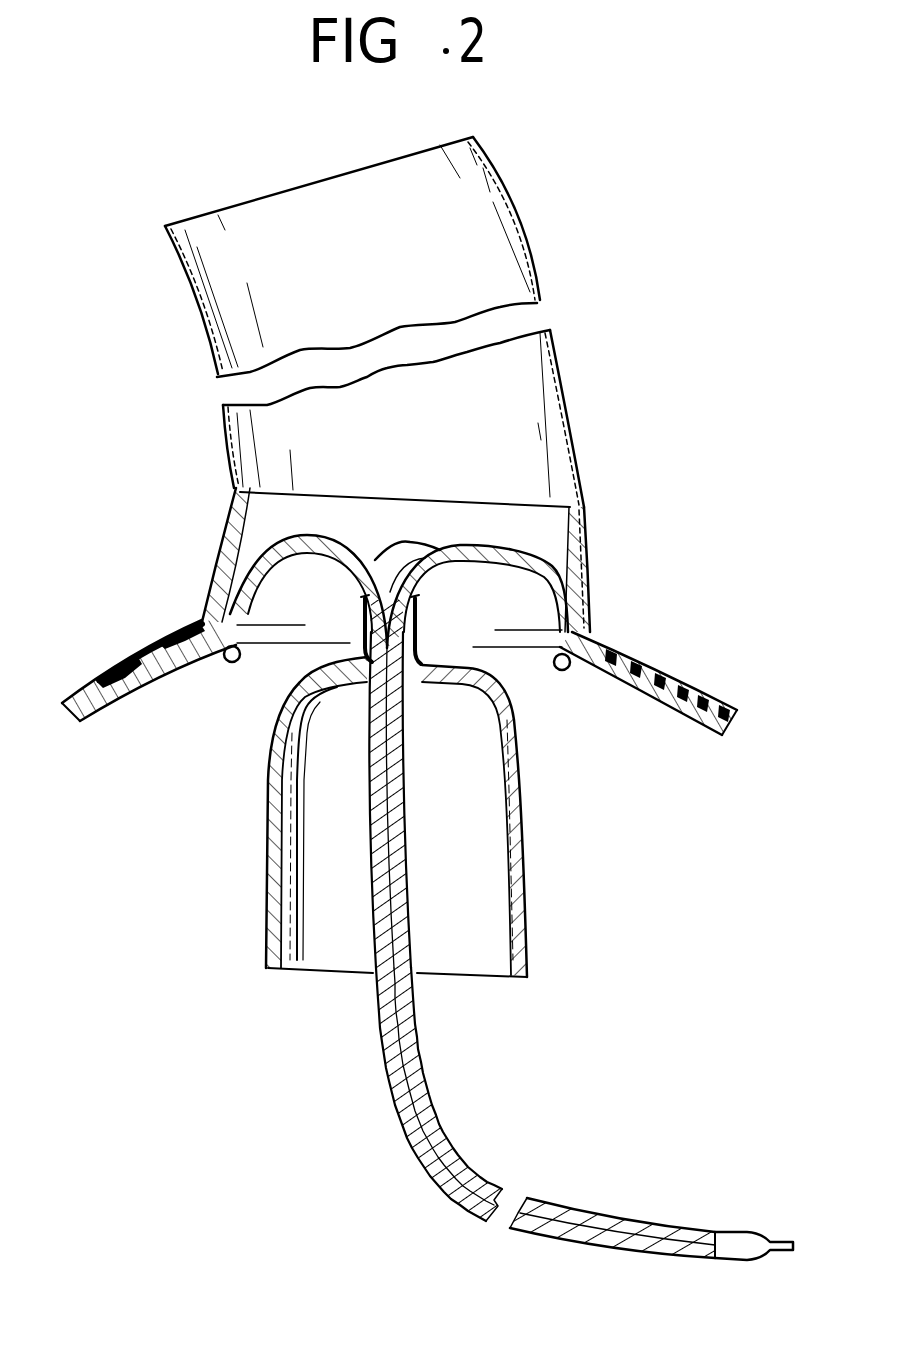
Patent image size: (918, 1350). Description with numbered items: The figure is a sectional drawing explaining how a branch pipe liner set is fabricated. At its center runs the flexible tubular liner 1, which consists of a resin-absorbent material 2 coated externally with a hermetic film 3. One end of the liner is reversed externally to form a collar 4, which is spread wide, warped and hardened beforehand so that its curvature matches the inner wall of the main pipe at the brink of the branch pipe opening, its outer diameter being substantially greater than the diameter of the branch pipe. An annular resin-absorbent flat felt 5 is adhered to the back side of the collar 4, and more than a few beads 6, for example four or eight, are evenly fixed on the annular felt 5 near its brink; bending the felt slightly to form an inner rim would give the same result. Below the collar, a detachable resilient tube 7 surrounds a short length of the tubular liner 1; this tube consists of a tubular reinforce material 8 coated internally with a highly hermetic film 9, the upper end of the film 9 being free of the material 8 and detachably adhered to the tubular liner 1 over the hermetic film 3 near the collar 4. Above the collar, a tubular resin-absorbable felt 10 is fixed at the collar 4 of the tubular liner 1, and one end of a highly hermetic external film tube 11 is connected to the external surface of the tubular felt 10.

The flexible tubular liner 1 is at (440, 1092).
The resin-absorbent material 2 is at (408, 1040).
The hermetic film 3 is at (463, 1157).
The collar 4 is at (670, 667).
The annular resin-absorbent flat felt 5 is at (657, 687).
The beads 6 is at (230, 663).
The detachable resilient tube 7 is at (258, 818).
The tubular reinforce material 8 is at (273, 897).
The highly hermetic film 9 is at (418, 626).
The tubular resin-absorbable felt 10 is at (240, 517).
The highly hermetic external film tube 11 is at (577, 452).